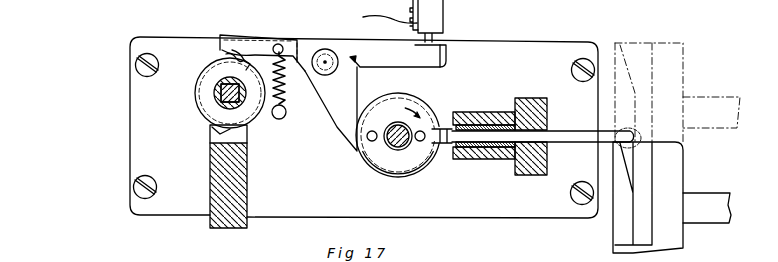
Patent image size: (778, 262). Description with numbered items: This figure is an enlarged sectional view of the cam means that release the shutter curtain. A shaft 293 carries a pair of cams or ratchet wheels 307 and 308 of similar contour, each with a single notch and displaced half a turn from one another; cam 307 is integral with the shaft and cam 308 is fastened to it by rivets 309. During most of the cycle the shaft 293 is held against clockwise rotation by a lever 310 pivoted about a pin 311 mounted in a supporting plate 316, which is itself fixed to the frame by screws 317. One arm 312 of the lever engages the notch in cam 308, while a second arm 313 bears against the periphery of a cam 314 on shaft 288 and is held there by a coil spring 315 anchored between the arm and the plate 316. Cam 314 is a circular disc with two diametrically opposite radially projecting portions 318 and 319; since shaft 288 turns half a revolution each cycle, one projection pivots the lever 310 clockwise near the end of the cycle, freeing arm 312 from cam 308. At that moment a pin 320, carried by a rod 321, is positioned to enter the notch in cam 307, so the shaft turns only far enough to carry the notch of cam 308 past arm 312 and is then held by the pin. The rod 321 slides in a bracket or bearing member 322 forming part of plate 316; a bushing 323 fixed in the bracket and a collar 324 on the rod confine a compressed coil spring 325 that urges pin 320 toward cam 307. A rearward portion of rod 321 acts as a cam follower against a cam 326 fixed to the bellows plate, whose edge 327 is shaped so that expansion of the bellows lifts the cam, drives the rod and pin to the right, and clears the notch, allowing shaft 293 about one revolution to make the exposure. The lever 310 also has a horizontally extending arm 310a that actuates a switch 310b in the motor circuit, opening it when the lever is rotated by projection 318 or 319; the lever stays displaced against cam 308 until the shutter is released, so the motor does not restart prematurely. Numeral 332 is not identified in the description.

The shaft 288 is at (214, 93).
The shaft 293 is at (397, 150).
The cam 307 is at (426, 111).
The cam 308 is at (360, 161).
The rivets 309 is at (372, 141).
The lever 310 is at (361, 68).
The horizontally extending arm 310a is at (428, 60).
The switch 310b is at (445, 13).
The pivot pin 311 is at (328, 50).
The arm 312 is at (331, 123).
The second arm 313 is at (273, 23).
The cam 314 is at (213, 106).
The coil spring 315 is at (285, 94).
The supporting plate 316 is at (162, 204).
The screws 317 is at (135, 65).
The radially projecting portion 318 is at (226, 55).
The radially projecting portion 319 is at (221, 132).
The pin 320 is at (440, 147).
The rod 321 is at (563, 142).
The bracket or bearing member 322 is at (500, 160).
The bushing 323 is at (527, 166).
The collar 324 is at (470, 126).
The compressed coil spring 325 is at (522, 124).
The cam 326 is at (650, 186).
The edge 327 is at (637, 228).
The member 332 is at (577, 261).